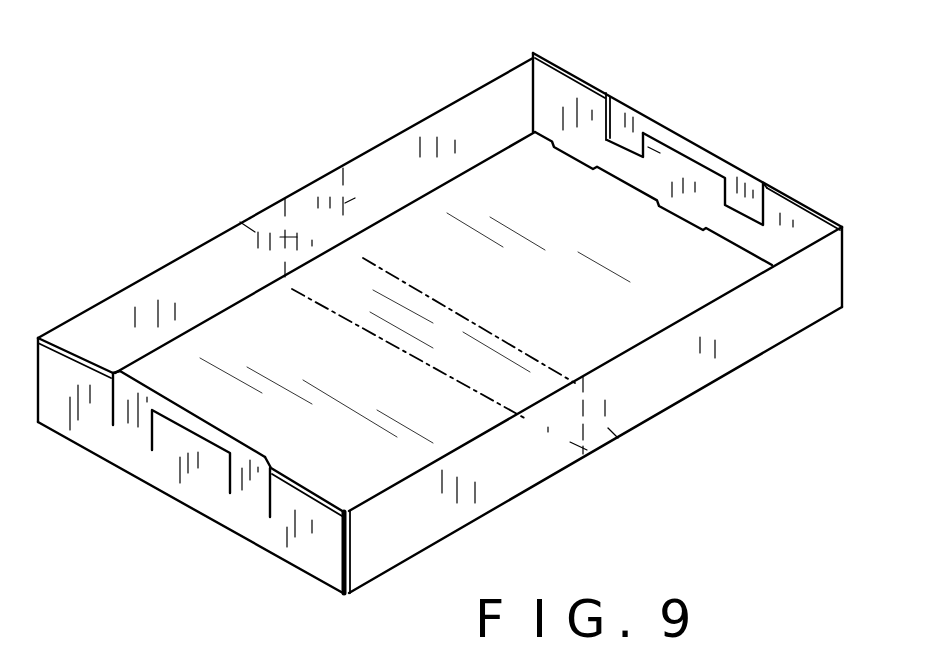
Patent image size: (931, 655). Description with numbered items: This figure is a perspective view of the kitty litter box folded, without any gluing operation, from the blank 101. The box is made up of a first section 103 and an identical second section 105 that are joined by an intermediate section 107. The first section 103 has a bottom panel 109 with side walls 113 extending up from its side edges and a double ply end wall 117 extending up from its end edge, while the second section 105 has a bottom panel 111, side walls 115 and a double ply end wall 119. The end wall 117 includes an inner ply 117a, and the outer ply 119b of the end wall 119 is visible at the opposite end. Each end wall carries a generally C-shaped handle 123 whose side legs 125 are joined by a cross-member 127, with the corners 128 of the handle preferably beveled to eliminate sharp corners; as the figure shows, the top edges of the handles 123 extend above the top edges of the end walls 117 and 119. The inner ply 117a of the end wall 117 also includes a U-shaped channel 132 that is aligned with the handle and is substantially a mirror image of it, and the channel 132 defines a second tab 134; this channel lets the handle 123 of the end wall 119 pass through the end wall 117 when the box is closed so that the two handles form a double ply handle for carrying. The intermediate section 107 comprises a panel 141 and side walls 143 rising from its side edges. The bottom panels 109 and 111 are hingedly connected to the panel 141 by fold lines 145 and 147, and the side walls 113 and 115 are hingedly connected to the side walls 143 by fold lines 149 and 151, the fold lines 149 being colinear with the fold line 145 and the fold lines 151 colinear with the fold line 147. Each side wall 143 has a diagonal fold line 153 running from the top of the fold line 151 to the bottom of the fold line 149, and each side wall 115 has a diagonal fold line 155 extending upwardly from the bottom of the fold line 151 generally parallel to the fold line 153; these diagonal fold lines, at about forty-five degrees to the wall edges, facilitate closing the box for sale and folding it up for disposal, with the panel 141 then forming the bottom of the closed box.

The blank 101 is at (678, 60).
The first section 103 is at (447, 86).
The second section 105 is at (188, 243).
The intermediate section 107 is at (304, 170).
The bottom panel 109 is at (569, 317).
The bottom panel 111 is at (299, 378).
The side wall 113 is at (415, 160).
The side wall 115 is at (133, 327).
The end wall 117 is at (795, 183).
The inner ply 117a is at (553, 98).
The end wall 119 is at (54, 441).
The outer ply 119b is at (332, 558).
The handle 123 is at (172, 378).
The side leg 125 is at (630, 137).
The cross-member 127 is at (203, 440).
The corner 128 is at (608, 94).
The U-shaped channel 132 is at (609, 118).
The second tab 134 is at (653, 150).
The panel 141 is at (329, 290).
The side wall 143 is at (323, 178).
The fold line 145 is at (477, 325).
The fold line 147 is at (425, 362).
The fold line 149 is at (345, 203).
The fold line 151 is at (248, 227).
The diagonal fold line 153 is at (324, 232).
The diagonal fold line 155 is at (257, 258).